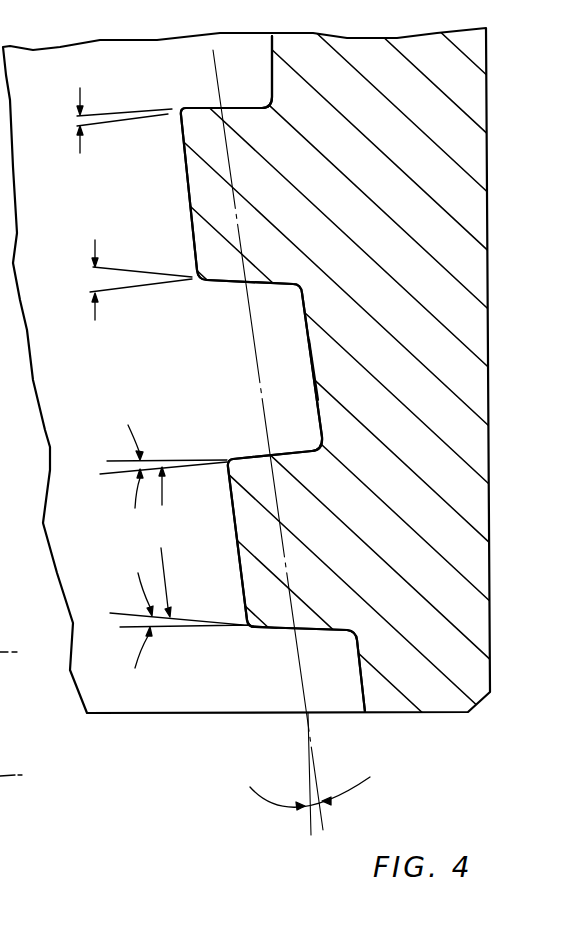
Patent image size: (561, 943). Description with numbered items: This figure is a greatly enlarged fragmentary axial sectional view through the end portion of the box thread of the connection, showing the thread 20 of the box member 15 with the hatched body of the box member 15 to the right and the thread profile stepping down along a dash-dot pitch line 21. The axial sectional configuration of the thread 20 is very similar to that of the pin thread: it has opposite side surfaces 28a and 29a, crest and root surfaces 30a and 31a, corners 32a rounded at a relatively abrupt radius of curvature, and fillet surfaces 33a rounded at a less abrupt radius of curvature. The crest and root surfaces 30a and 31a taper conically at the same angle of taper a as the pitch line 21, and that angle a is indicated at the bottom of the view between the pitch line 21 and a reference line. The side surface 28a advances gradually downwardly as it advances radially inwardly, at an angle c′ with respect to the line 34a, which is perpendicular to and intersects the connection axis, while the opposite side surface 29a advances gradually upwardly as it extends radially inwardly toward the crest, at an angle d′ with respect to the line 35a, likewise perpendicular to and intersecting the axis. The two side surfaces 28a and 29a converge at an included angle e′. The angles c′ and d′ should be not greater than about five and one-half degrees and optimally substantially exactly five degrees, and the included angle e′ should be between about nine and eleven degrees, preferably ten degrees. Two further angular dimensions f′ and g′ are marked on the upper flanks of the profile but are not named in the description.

The box member 15 is at (473, 342).
The thread 20 is at (193, 188).
The pitch line 21 is at (317, 773).
The side surface 28a is at (250, 460).
The side surface 29a is at (282, 627).
The crest surface 30a is at (193, 232).
The root surface 31a is at (314, 356).
The corner 32a is at (170, 107).
The fillet surface 33a is at (297, 287).
The line perpendicular to axis 34a is at (155, 460).
The line perpendicular to axis 35a is at (187, 627).
The angle of taper a is at (313, 817).
The angle c′ is at (107, 462).
The angle d′ is at (117, 620).
The included angle e′ is at (162, 542).
The angle dimension f′ is at (88, 279).
The angle dimension g′ is at (77, 120).